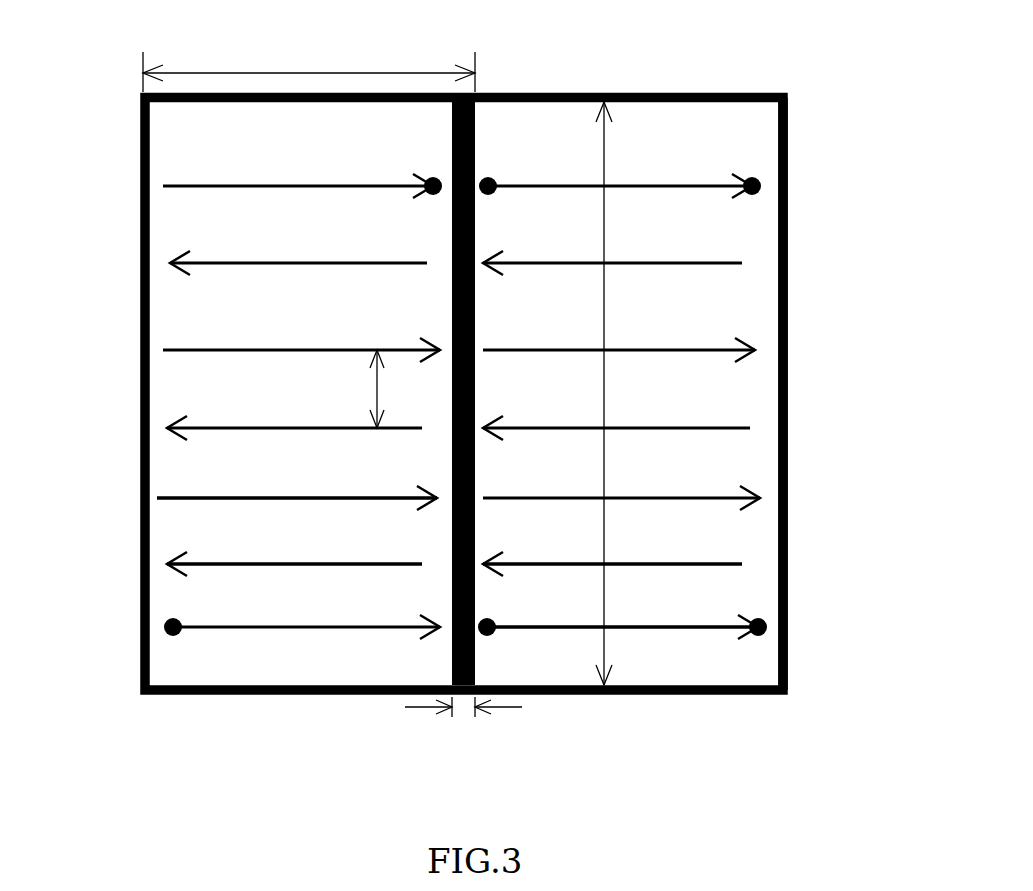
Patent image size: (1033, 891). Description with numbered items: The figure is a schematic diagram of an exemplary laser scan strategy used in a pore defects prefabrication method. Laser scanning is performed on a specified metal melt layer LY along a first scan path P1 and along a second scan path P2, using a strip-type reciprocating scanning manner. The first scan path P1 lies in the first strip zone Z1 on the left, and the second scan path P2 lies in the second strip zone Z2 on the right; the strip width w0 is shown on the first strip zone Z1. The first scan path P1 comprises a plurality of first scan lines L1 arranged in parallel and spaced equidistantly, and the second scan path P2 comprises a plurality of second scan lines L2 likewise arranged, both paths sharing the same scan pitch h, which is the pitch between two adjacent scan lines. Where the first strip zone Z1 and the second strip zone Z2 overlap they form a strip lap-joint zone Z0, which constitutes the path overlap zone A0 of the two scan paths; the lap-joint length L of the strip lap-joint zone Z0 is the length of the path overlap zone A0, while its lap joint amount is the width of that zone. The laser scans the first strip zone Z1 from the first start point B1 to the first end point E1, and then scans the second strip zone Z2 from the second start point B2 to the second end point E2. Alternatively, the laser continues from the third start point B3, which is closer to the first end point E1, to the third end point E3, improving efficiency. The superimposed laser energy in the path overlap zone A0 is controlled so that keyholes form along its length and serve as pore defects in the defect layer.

The first scan path P1 is at (212, 158).
The second scan path P2 is at (705, 227).
The path overlap zone A0 is at (477, 135).
The strip lap-joint zone Z0 is at (463, 393).
The first end point E1 is at (423, 160).
The second end point E2 is at (752, 160).
The third end point E3 is at (752, 645).
The first start point B1 is at (181, 645).
The second start point B2 is at (502, 645).
The third start point B3 is at (510, 198).
The first scan line L1 is at (260, 495).
The second scan line L2 is at (683, 497).
The specified metal melt layer LY is at (788, 585).
The first strip zone Z1 is at (178, 522).
The second strip zone Z2 is at (710, 588).
The strip width w0 is at (309, 66).
The lap-joint length L is at (617, 393).
The scan pitch h is at (368, 389).